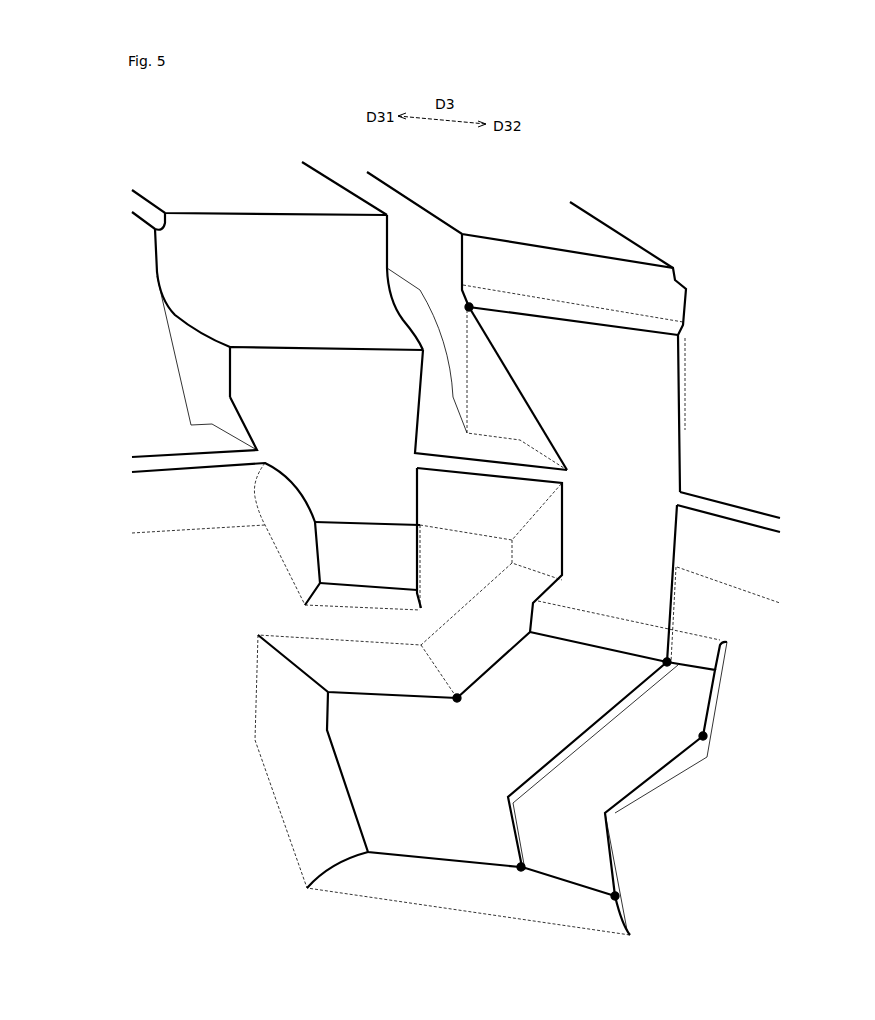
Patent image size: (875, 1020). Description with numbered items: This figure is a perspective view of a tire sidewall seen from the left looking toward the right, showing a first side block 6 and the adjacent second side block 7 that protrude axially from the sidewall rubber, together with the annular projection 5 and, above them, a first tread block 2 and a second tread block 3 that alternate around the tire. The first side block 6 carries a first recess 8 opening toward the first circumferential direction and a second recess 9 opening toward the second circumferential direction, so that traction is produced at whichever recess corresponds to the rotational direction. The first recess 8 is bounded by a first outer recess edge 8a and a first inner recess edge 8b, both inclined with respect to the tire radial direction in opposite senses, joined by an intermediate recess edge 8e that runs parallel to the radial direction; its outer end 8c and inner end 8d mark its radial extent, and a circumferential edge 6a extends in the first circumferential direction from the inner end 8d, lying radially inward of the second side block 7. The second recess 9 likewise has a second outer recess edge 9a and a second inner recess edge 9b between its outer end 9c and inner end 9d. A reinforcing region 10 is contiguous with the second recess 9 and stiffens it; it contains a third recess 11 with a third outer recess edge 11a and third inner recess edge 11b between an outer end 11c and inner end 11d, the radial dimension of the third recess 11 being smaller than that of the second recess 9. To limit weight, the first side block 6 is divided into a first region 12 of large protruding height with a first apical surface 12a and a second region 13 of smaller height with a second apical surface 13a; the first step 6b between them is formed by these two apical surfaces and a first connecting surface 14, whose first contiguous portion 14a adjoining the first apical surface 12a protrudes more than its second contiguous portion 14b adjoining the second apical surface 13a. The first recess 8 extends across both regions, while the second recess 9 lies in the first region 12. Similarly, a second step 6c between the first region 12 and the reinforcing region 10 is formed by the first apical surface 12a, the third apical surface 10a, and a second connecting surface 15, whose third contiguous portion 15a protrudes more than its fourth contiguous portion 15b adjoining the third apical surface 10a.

The first tread block 2 is at (531, 210).
The second tread block 3 is at (228, 180).
The annular projection 5 is at (742, 510).
The first side block 6 is at (247, 795).
The circumferential edge 6a is at (370, 692).
The first step 6b is at (679, 636).
The second step 6c is at (517, 891).
The second side block 7 is at (325, 368).
The first recess 8 is at (492, 552).
The first outer recess edge 8a is at (503, 363).
The first inner recess edge 8b is at (487, 668).
The outer end 8c is at (460, 309).
The inner end 8d is at (466, 707).
The intermediate recess edge 8e is at (555, 518).
The second recess 9 is at (535, 811).
The second outer recess edge 9a is at (597, 730).
The second inner recess edge 9b is at (522, 857).
The outer end 9c is at (656, 664).
The inner end 9d is at (513, 875).
The reinforcing region 10 is at (575, 882).
The third apical surface 10a is at (680, 697).
The third recess 11 is at (633, 827).
The third outer recess edge 11a is at (660, 772).
The third inner recess edge 11b is at (613, 862).
The outer end 11c is at (693, 738).
The inner end 11d is at (606, 904).
The first region 12 is at (443, 847).
The first apical surface 12a is at (463, 745).
The second region 13 is at (577, 347).
The second apical surface 13a is at (634, 469).
The first connecting surface 14 is at (635, 627).
The first contiguous portion 14a is at (588, 637).
The second contiguous portion 14b is at (621, 608).
The second connecting surface 15 is at (522, 862).
The third contiguous portion 15a is at (607, 720).
The fourth contiguous portion 15b is at (555, 755).